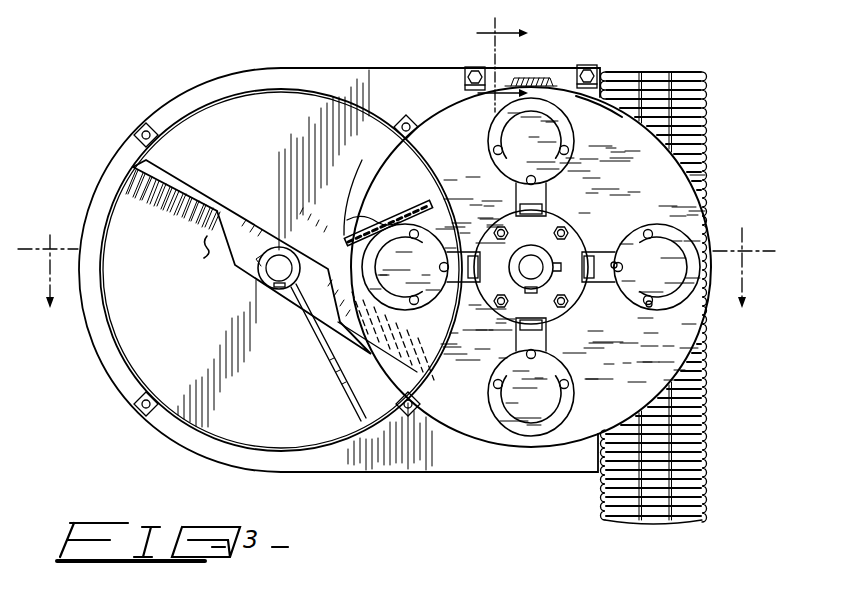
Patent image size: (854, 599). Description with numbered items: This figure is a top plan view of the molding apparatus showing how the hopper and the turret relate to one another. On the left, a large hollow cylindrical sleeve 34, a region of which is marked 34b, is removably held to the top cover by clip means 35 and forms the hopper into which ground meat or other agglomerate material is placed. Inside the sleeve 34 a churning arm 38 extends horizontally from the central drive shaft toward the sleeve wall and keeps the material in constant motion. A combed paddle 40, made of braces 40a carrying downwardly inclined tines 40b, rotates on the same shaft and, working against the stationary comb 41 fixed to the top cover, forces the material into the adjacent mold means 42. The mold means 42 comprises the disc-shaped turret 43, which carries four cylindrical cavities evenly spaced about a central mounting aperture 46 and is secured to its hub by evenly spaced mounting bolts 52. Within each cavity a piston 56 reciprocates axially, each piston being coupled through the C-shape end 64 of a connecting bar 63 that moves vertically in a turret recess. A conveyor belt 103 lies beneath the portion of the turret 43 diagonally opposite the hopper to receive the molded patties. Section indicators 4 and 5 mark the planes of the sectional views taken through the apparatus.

The cylindrical sleeve 34 is at (178, 122).
The casing inner wall region 34b is at (396, 167).
The clip means 35 is at (142, 128).
The churning arm 38 is at (334, 387).
The combed paddle 40 is at (236, 203).
The braces 40a is at (182, 178).
The tines 40b is at (207, 246).
The stationary comb 41 is at (363, 222).
The mold means 42 is at (718, 236).
The turret 43 is at (595, 112).
The central mounting aperture 46 is at (585, 244).
The mounting bolts 52 is at (498, 226).
The piston barrier means 56 is at (558, 406).
The connecting bar 63 is at (604, 277).
The C-shape end 64 is at (645, 307).
The conveyor belt 103 is at (684, 434).
The section line 4- 4 is at (396, 268).
The section line 5- 5 is at (494, 68).